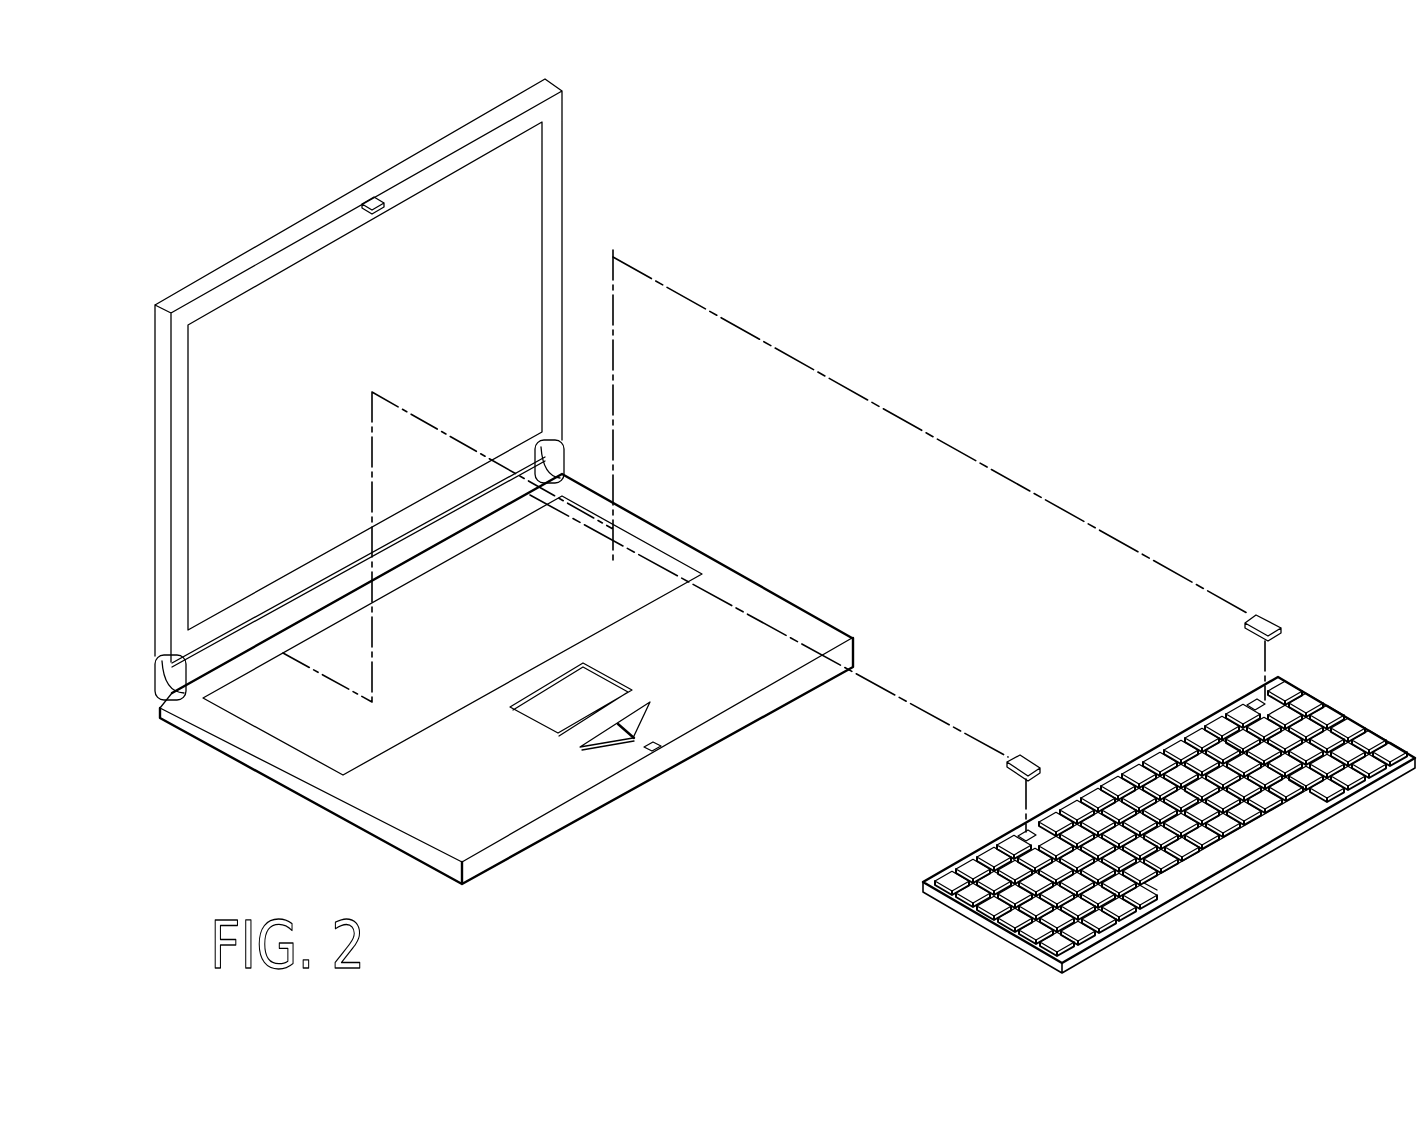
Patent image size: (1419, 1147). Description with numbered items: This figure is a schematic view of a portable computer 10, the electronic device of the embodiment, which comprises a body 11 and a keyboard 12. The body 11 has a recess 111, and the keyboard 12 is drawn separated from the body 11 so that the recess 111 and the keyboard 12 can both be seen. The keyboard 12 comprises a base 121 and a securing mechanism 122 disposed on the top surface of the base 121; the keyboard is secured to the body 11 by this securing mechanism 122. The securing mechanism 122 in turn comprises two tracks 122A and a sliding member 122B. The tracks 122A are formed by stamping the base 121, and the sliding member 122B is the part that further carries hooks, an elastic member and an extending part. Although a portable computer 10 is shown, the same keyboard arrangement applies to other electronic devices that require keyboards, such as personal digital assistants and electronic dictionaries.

The portable computer 10 is at (163, 181).
The body 11 is at (160, 708).
The recess 111 is at (282, 653).
The keyboard 12 is at (707, 812).
The base 121 is at (921, 888).
The securing mechanism 122 is at (787, 765).
The tracks 122A is at (1014, 836).
The sliding member 122B is at (1005, 762).